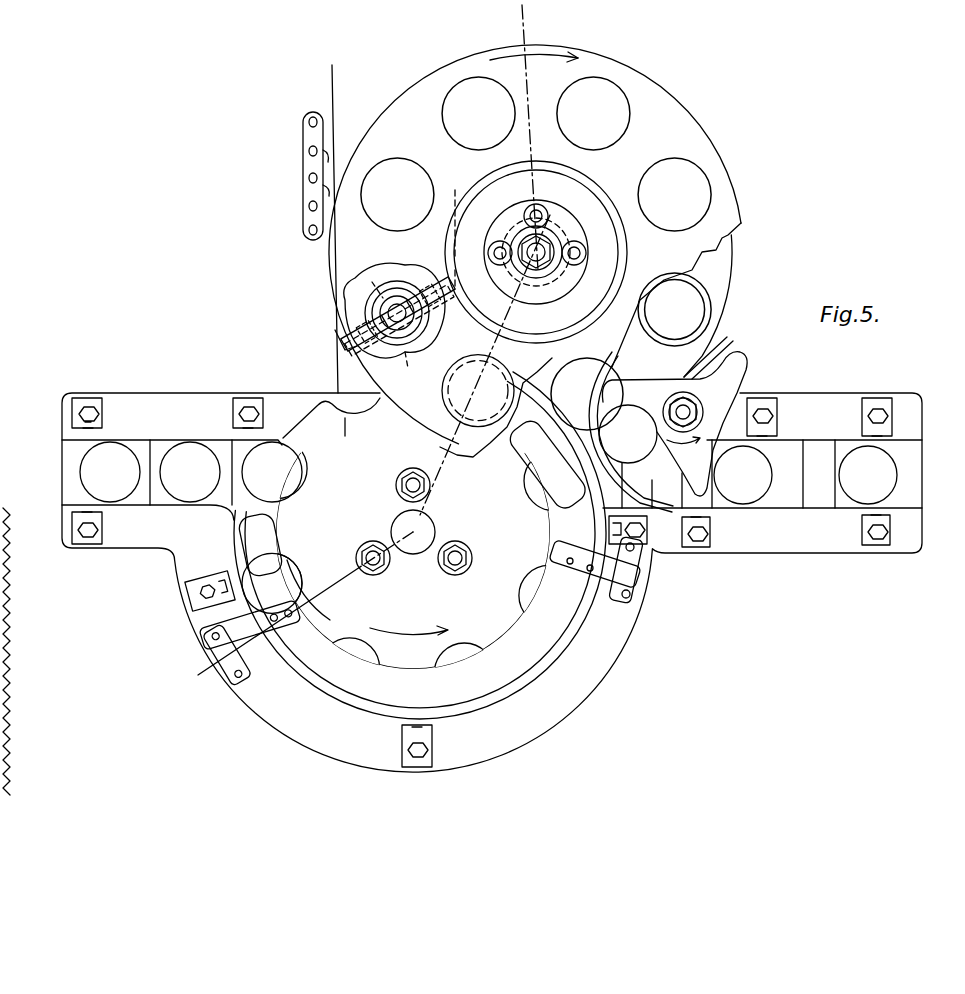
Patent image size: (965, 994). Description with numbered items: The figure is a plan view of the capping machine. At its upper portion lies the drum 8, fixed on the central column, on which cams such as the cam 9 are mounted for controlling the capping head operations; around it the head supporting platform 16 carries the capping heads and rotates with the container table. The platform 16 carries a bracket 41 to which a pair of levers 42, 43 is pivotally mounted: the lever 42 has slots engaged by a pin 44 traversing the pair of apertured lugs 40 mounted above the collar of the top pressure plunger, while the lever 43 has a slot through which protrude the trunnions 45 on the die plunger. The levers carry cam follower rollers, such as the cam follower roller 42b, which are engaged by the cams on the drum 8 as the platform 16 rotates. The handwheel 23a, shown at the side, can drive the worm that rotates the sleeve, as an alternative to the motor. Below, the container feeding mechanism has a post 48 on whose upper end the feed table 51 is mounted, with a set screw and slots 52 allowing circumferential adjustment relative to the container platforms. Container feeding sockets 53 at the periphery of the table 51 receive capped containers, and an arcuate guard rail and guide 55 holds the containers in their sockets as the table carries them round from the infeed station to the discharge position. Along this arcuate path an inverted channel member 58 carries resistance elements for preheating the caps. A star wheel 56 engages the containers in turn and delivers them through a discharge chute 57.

The drum 8 is at (574, 204).
The cam 9 is at (622, 244).
The head supporting platform 16 is at (718, 205).
The handwheel 23a is at (305, 214).
The apertured lugs 40 is at (418, 322).
The bracket 41 is at (355, 347).
The lever 42 is at (428, 282).
The cam follower roller 42b is at (461, 225).
The lever 43 is at (345, 296).
The pin 44 is at (375, 320).
The trunnions 45 is at (382, 272).
The post 48 is at (406, 524).
The feed table 51 is at (448, 511).
The set screw and slots 52 is at (441, 566).
The container feeding sockets 53 is at (300, 472).
The arcuate guard rail and guide 55 is at (305, 609).
The star wheel 56 is at (735, 372).
The discharge chute 57 is at (843, 412).
The inverted channel member 58 is at (557, 528).